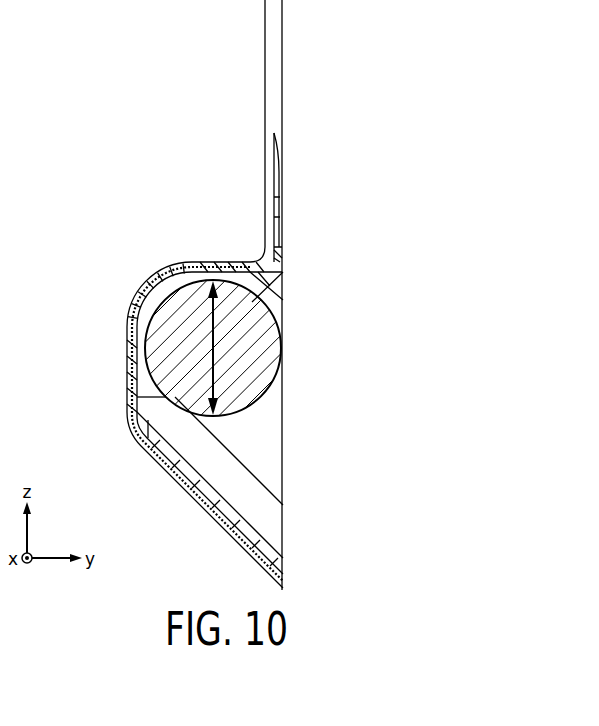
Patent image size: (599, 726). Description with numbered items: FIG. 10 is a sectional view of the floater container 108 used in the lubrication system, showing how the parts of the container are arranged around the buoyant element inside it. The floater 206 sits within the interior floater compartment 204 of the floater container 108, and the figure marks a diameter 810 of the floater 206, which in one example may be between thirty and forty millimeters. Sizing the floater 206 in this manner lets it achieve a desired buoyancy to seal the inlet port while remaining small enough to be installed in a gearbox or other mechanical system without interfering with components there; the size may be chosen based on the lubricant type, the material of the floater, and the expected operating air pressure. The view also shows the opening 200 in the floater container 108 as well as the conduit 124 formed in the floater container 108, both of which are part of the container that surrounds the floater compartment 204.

The floater container 108 is at (100, 122).
The conduit 124 is at (228, 86).
The opening 200 is at (158, 278).
The interior floater compartment 204 is at (265, 448).
The floater 206 is at (178, 345).
The diameter 810 is at (215, 358).